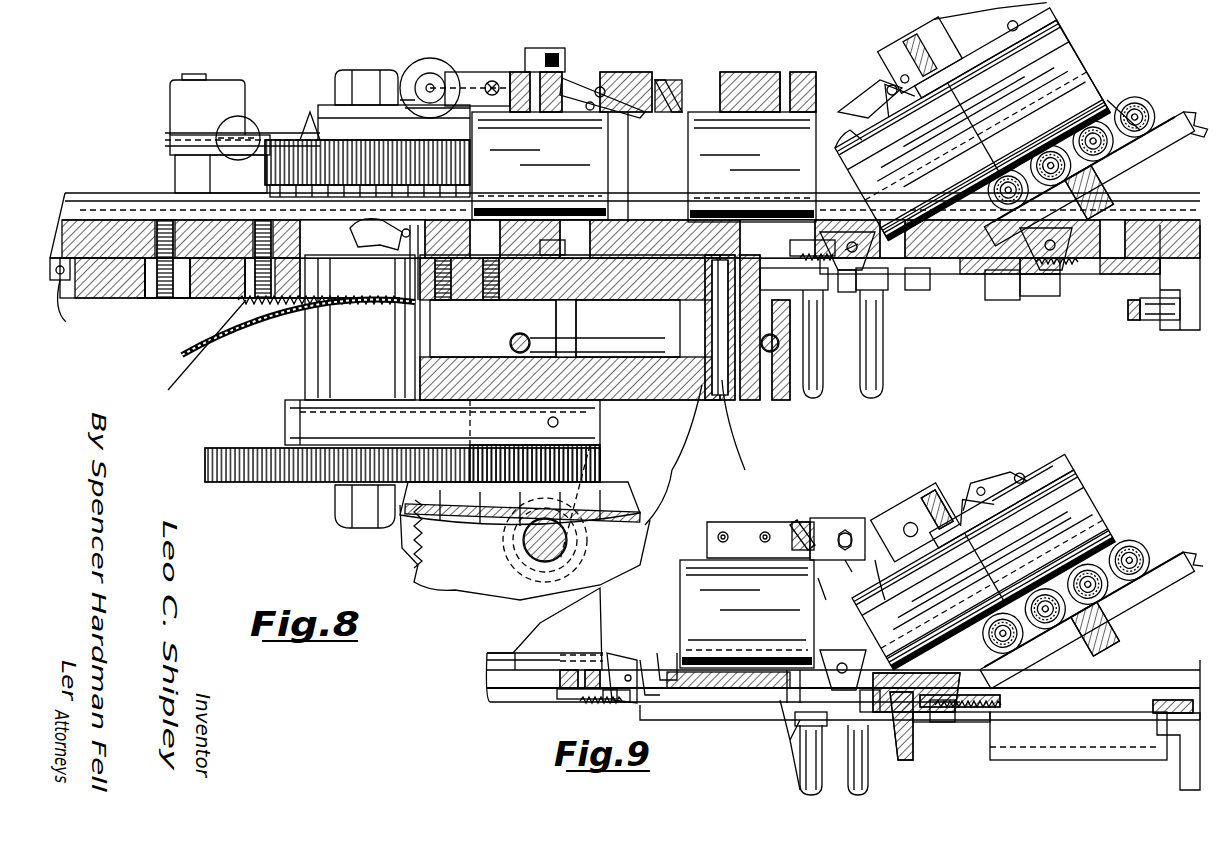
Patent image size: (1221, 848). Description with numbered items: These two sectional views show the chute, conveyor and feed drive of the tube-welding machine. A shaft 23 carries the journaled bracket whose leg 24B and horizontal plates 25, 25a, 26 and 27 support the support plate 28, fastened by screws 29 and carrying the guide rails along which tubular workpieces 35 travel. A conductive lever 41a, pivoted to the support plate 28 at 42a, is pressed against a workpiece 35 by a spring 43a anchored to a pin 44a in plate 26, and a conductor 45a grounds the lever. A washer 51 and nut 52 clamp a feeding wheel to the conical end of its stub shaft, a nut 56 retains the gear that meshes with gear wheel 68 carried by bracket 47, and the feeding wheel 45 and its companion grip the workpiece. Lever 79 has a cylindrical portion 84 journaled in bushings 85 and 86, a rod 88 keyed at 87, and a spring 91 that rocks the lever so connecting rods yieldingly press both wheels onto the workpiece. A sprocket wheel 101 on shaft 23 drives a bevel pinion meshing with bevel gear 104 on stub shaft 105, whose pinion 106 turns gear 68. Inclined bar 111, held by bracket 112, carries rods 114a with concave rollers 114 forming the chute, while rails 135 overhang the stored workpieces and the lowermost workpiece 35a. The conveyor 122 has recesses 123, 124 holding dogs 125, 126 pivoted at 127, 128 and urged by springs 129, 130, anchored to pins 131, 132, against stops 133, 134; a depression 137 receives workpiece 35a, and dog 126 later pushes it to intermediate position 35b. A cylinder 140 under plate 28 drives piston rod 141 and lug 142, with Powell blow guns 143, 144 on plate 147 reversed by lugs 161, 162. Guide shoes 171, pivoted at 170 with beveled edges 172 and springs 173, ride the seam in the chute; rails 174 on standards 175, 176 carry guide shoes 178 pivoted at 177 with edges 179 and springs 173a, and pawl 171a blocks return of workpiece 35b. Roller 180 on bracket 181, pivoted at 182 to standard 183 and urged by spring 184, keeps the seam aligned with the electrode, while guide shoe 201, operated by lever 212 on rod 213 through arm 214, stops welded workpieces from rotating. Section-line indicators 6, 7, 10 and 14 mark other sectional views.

In FIG. 8, the section line 6- 6 is at (495, 110).
In FIG. 8, the section line 7- 7 is at (692, 262).
In FIG. 9, the section line 10- 10 is at (719, 735).
In FIG. 8, the section line 14- 14 is at (65, 190).
In FIG. 8, the shaft 23 is at (520, 540).
In FIG. 9, the shaft 23 is at (545, 629).
In FIG. 8, the leg 24B is at (432, 335).
In FIG. 8, the horizontal plate 25 is at (640, 272).
In FIG. 8, the carriage bolts 25a is at (590, 276).
In FIG. 8, the horizontal plate 26 is at (148, 270).
In FIG. 8, the horizontal plate 27 is at (736, 425).
In FIG. 8, the support plate 28 is at (192, 298).
In FIG. 8, the screws 29 is at (160, 298).
In FIG. 8, the tubular workpiece 35 is at (610, 178).
In FIG. 9, the tubular workpiece 35 is at (682, 575).
In FIG. 8, the lowermost workpiece 35a is at (1082, 62).
In FIG. 9, the lowermost workpiece 35a is at (907, 509).
In FIG. 9, the workpiece in intermediate position 35b is at (745, 575).
In FIG. 8, the conductive lever 41a is at (410, 270).
In FIG. 8, the pivot 42a is at (416, 233).
In FIG. 8, the spring 43a is at (278, 304).
In FIG. 8, the pin 44a is at (187, 352).
In FIG. 8, the feeding wheel 45 is at (300, 135).
In FIG. 8, the conductor 45a is at (252, 342).
In FIG. 8, the bracket 47 is at (312, 385).
In FIG. 8, the washer 51 is at (322, 105).
In FIG. 8, the nut 52 is at (366, 74).
In FIG. 8, the nut 56 is at (345, 530).
In FIG. 8, the gear wheel 68 is at (232, 483).
In FIG. 8, the lever 79 is at (725, 266).
In FIG. 8, the cylindrical portion 84 is at (795, 395).
In FIG. 8, the bushing 85 is at (812, 340).
In FIG. 8, the bushing 86 is at (800, 390).
In FIG. 8, the key 87 is at (702, 385).
In FIG. 8, the rod 88 is at (565, 258).
In FIG. 8, the spring 91 is at (520, 333).
In FIG. 8, the sprocket wheel 101 is at (410, 550).
In FIG. 8, the bevel gear 104 is at (640, 503).
In FIG. 8, the stub shaft 105 is at (570, 433).
In FIG. 8, the pinion 106 is at (640, 472).
In FIG. 8, the bar 111 is at (1137, 166).
In FIG. 9, the bar 111 is at (1128, 566).
In FIG. 8, the bracket 112 is at (1102, 197).
In FIG. 9, the bracket 112 is at (1100, 644).
In FIG. 8, the concave rollers 114 is at (1087, 124).
In FIG. 9, the concave rollers 114 is at (1082, 632).
In FIG. 8, the rods 114a is at (1104, 196).
In FIG. 9, the rods 114a is at (1063, 637).
In FIG. 8, the conveyor 122 is at (925, 272).
In FIG. 9, the conveyor 122 is at (950, 762).
In FIG. 8, the recess 123 is at (880, 240).
In FIG. 9, the recess 123 is at (645, 696).
In FIG. 8, the recess 124 is at (1005, 276).
In FIG. 9, the recess 124 is at (840, 690).
In FIG. 8, the dog 125 is at (836, 226).
In FIG. 9, the dog 125 is at (632, 668).
In FIG. 8, the dog 126 is at (1056, 270).
In FIG. 9, the dog 126 is at (826, 670).
In FIG. 9, the pivot 127 is at (630, 704).
In FIG. 9, the pivot 128 is at (838, 662).
In FIG. 9, the spring 129 is at (600, 706).
In FIG. 8, the spring 130 is at (1000, 282).
In FIG. 9, the spring 130 is at (790, 745).
In FIG. 9, the pin 131 is at (565, 687).
In FIG. 8, the pin 132 is at (1002, 274).
In FIG. 9, the pin 132 is at (800, 700).
In FIG. 9, the stop 133 is at (618, 660).
In FIG. 9, the stop 134 is at (800, 750).
In FIG. 8, the rails 135 is at (1029, 73).
In FIG. 9, the rails 135 is at (978, 466).
In FIG. 8, the depression 137 is at (886, 300).
In FIG. 9, the depression 137 is at (660, 655).
In FIG. 8, the cylinder 140 is at (1190, 332).
In FIG. 9, the cylinder 140 is at (1178, 760).
In FIG. 8, the piston rod 141 is at (1145, 322).
In FIG. 9, the piston rod 141 is at (1045, 760).
In FIG. 8, the lug 142 is at (1128, 322).
In FIG. 9, the lug 142 is at (905, 762).
In FIG. 8, the Powell blow gun 143 is at (810, 305).
In FIG. 9, the Powell blow gun 143 is at (812, 775).
In FIG. 8, the Powell blow gun 144 is at (882, 330).
In FIG. 9, the Powell blow gun 144 is at (858, 790).
In FIG. 8, the plate 147 is at (935, 290).
In FIG. 9, the plate 147 is at (940, 722).
In FIG. 8, the lug 161 is at (808, 248).
In FIG. 9, the lug 161 is at (580, 705).
In FIG. 8, the lug 162 is at (1100, 292).
In FIG. 9, the lug 162 is at (880, 690).
In FIG. 8, the pivot 170 is at (972, 130).
In FIG. 9, the pivot 170 is at (981, 540).
In FIG. 8, the guide shoes 171 is at (985, 33).
In FIG. 9, the guide shoes 171 is at (1002, 453).
In FIG. 9, the pawl 171a is at (816, 580).
In FIG. 8, the beveled edge 172 is at (889, 74).
In FIG. 9, the beveled edge 172 is at (1058, 497).
In FIG. 8, the spring 173 is at (938, 50).
In FIG. 9, the spring 173 is at (967, 461).
In FIG. 8, the springs 173a is at (678, 85).
In FIG. 9, the springs 173a is at (855, 532).
In FIG. 8, the rails 174 is at (768, 80).
In FIG. 9, the rails 174 is at (818, 516).
In FIG. 8, the standard 175 is at (620, 144).
In FIG. 8, the standard 176 is at (979, 142).
In FIG. 8, the pivot 177 is at (944, 120).
In FIG. 9, the pivot 177 is at (982, 568).
In FIG. 8, the guide shoes 178 is at (830, 88).
In FIG. 9, the guide shoes 178 is at (885, 562).
In FIG. 8, the beveled edges 179 is at (840, 113).
In FIG. 9, the beveled edges 179 is at (845, 560).
In FIG. 8, the roller 180 is at (425, 58).
In FIG. 8, the bracket 181 is at (468, 75).
In FIG. 8, the pivot 182 is at (491, 80).
In FIG. 8, the standard 183 is at (522, 80).
In FIG. 8, the spring 184 is at (562, 62).
In FIG. 8, the guide shoe 201 is at (182, 145).
In FIG. 8, the lever 212 is at (200, 178).
In FIG. 8, the rod 213 is at (197, 68).
In FIG. 8, the arm 214 is at (74, 306).